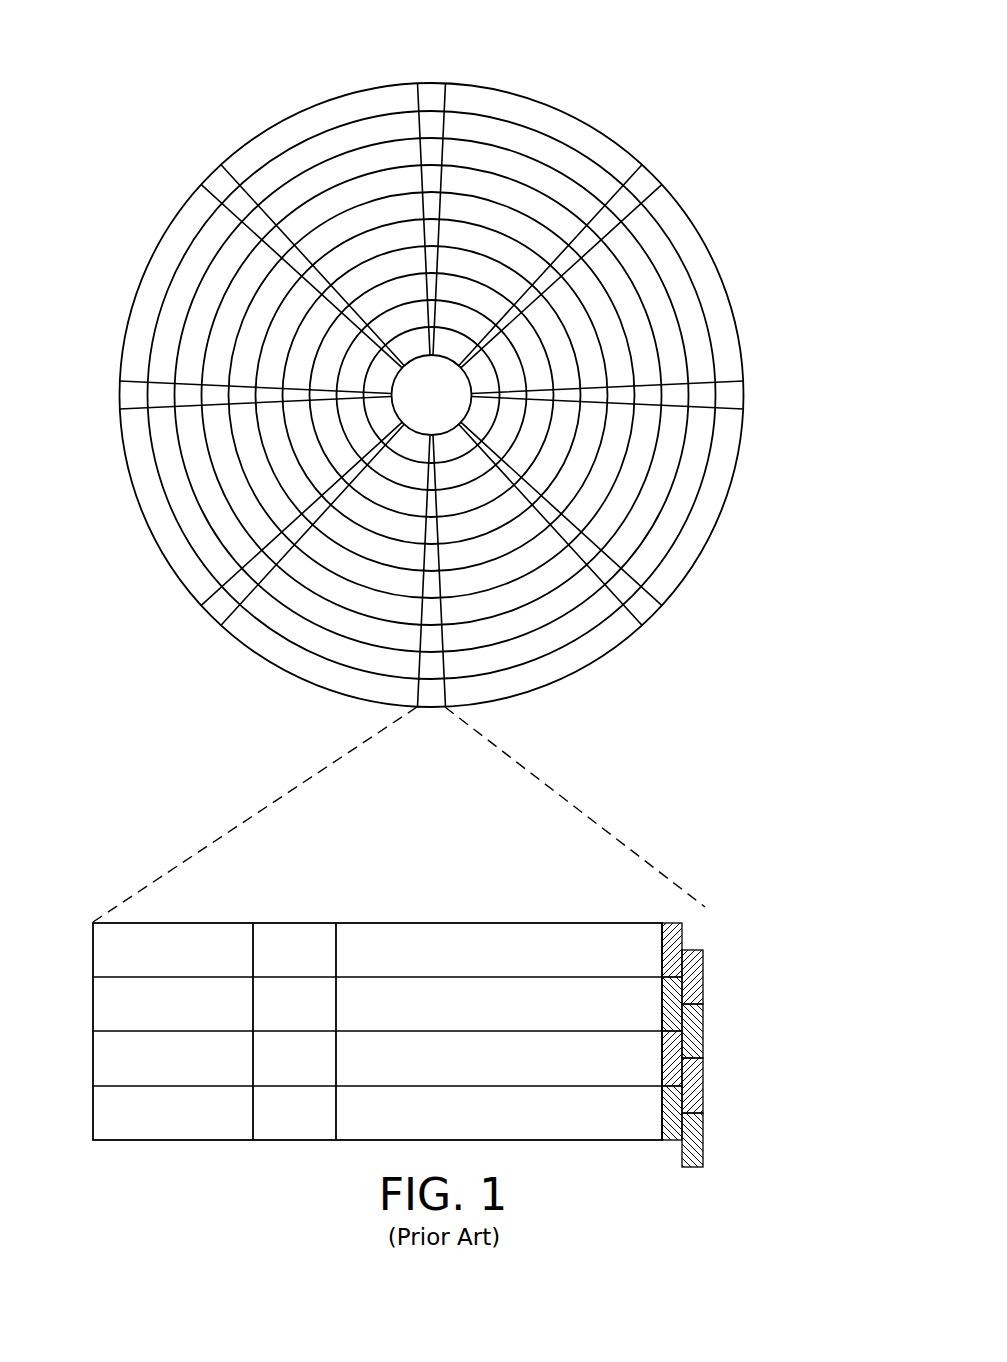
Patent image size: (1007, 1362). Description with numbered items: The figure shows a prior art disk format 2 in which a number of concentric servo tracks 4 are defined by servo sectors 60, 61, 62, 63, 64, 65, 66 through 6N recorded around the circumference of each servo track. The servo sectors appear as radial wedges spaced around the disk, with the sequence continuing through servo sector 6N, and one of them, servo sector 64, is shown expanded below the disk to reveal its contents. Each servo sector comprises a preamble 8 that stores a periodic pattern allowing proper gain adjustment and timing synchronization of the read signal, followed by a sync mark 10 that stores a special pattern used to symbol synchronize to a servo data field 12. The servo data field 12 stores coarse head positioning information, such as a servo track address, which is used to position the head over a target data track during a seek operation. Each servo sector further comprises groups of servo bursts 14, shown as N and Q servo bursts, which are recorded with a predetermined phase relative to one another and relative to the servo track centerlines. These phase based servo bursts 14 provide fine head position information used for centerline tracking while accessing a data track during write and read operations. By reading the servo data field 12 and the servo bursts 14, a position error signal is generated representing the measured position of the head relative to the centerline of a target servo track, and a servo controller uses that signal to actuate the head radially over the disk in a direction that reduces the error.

The disk format 2 is at (432, 407).
The servo tracks 4 is at (558, 130).
The servo sector 60 is at (433, 92).
The servo sector 61 is at (643, 182).
The servo sector 62 is at (733, 396).
The servo sector 63 is at (643, 608).
The servo sector 64 is at (295, 786).
The servo sector 65 is at (215, 610).
The servo sector 66 is at (125, 393).
The servo sector 6N is at (275, 245).
The preamble 8 is at (181, 922).
The sync mark 10 is at (298, 922).
The servo data field 12 is at (487, 922).
The servo bursts 14 is at (700, 919).